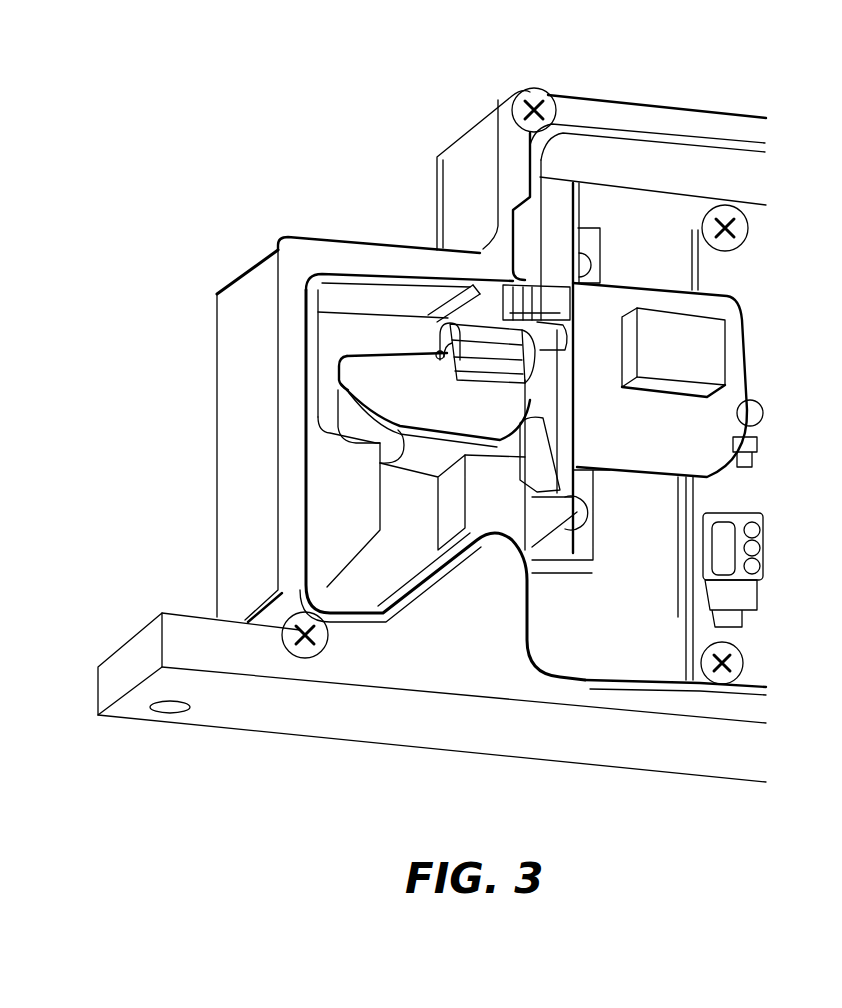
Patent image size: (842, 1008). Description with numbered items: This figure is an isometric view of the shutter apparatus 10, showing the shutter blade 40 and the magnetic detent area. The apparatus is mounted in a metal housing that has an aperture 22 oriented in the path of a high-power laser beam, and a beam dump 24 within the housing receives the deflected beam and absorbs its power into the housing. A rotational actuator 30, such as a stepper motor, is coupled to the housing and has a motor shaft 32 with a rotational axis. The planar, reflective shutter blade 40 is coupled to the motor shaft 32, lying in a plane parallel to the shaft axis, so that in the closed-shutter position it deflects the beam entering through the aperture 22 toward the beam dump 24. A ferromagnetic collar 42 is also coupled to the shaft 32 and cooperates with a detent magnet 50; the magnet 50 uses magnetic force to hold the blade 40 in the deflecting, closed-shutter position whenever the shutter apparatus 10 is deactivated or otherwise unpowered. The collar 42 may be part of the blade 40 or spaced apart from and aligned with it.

The shutter apparatus 10 is at (103, 171).
The aperture 22 is at (358, 428).
The beam dump 24 is at (383, 575).
The rotational actuator 30 is at (610, 302).
The motor shaft 32 is at (432, 352).
The shutter blade 40 is at (405, 392).
The ferromagnetic collar 42 is at (433, 355).
The detent magnet 50 is at (472, 333).